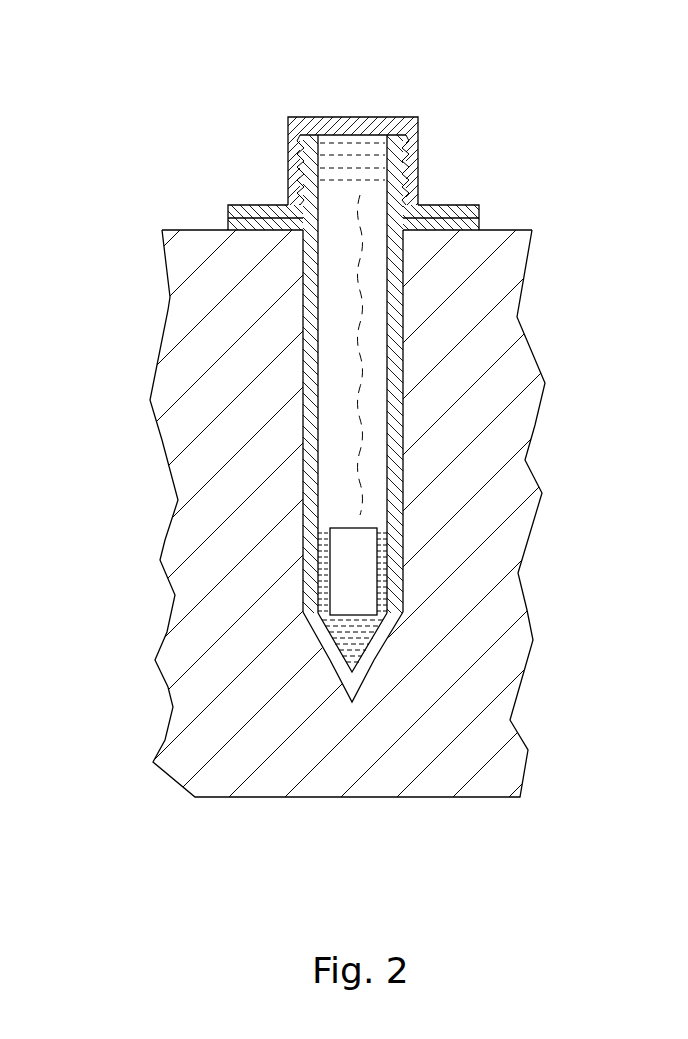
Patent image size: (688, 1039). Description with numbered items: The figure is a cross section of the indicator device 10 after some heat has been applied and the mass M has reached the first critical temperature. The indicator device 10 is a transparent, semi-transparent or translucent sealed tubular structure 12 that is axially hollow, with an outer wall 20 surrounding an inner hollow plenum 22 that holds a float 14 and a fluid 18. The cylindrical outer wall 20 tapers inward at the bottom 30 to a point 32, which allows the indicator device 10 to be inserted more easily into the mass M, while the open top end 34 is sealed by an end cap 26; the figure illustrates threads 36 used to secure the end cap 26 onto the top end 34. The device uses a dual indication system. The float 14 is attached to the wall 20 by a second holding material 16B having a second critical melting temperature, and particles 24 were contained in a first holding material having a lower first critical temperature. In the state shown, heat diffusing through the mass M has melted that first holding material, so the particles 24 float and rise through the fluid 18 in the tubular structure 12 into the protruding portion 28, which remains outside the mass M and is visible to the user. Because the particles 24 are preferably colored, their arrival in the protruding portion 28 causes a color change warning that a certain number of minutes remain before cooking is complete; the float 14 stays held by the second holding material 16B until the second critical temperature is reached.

The indicator device 10 is at (122, 68).
The tubular structure 12 is at (307, 375).
The float 14 is at (360, 583).
The second holding material 16B is at (383, 645).
The fluid 18 is at (382, 263).
The outer wall 20 is at (305, 325).
The inner hollow plenum 22 is at (382, 357).
The particles 24 is at (340, 157).
The end cap 26 is at (286, 170).
The protruding portion 28 is at (400, 172).
The bottom 30 is at (325, 638).
The point 32 is at (358, 707).
The top end 34 is at (360, 140).
The threads 36 is at (412, 197).
The mass M is at (275, 775).